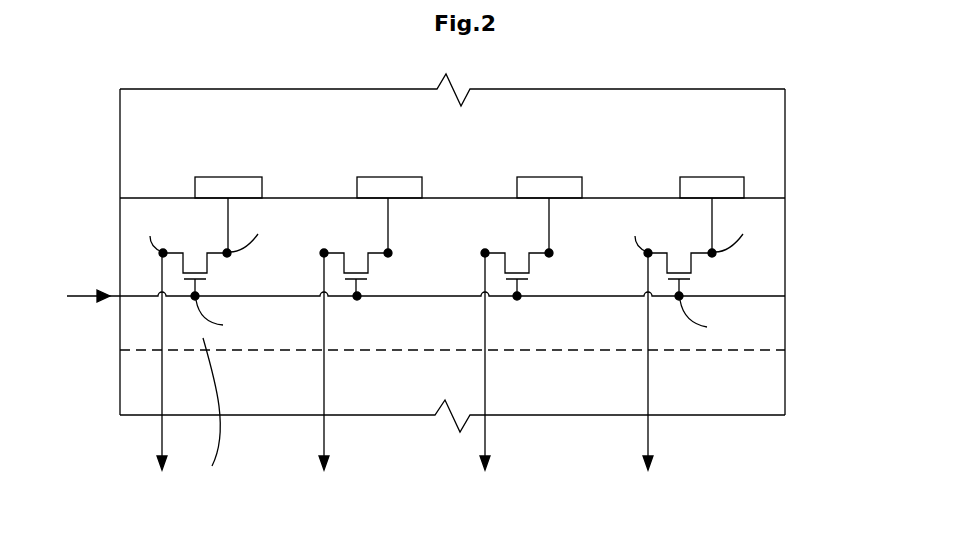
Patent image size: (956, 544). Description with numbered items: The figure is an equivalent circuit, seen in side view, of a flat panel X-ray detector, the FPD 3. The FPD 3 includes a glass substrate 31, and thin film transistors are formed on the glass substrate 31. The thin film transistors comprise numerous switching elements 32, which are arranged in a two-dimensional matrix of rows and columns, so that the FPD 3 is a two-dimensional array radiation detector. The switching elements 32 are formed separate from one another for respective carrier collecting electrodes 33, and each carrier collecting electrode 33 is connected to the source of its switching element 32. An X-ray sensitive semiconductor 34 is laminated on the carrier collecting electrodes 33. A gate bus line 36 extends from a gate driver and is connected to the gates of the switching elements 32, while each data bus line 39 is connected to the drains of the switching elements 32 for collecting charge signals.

The flat panel X-ray detector 3 is at (553, 425).
The glass substrate 31 is at (292, 390).
The switching element 32 is at (224, 280).
The carrier collecting electrode 33 is at (220, 185).
The X-ray sensitive semiconductor 34 is at (160, 124).
The gate bus line 36 is at (87, 299).
The data bus line 39 is at (160, 444).